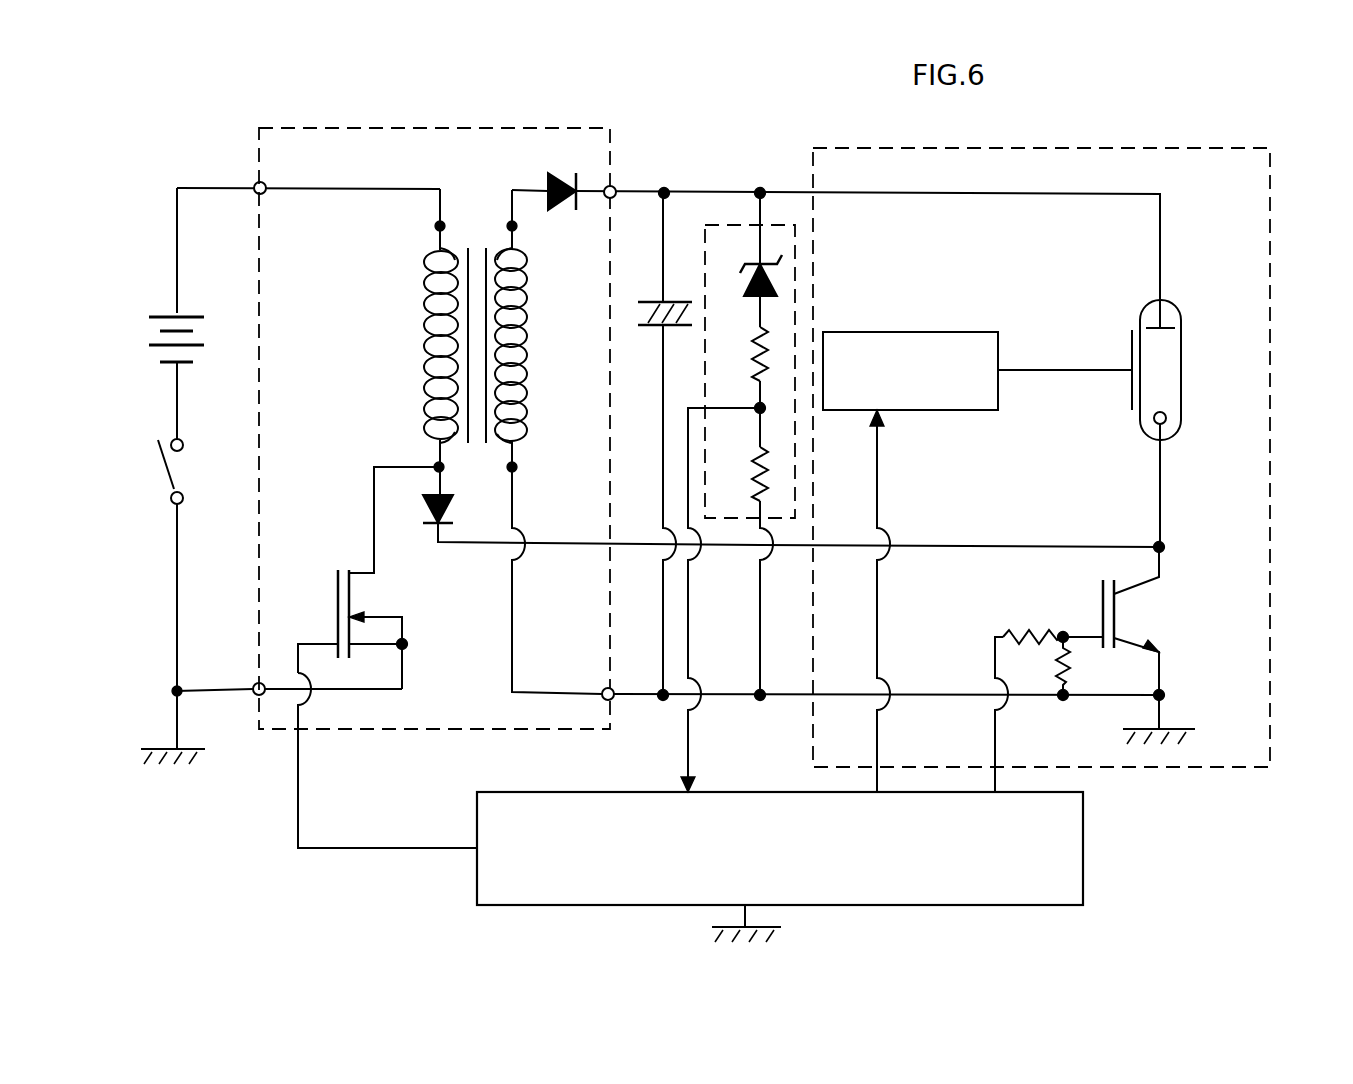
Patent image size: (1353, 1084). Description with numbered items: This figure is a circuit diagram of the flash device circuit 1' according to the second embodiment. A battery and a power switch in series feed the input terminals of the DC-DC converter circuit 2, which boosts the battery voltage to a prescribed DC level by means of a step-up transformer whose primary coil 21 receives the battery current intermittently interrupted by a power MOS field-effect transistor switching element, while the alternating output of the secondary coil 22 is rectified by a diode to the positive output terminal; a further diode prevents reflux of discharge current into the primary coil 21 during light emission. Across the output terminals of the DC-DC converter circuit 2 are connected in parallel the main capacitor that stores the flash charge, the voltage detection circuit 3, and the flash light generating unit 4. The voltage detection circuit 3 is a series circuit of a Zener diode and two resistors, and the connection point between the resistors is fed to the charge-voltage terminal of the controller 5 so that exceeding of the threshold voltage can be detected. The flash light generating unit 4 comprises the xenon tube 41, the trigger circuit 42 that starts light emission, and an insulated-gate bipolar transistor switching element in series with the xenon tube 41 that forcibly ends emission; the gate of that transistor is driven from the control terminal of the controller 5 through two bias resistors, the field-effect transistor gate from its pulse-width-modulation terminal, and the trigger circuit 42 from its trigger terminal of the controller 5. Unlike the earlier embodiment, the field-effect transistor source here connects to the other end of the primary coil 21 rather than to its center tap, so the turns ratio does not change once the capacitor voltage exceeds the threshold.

The flash device circuit 1' is at (721, 466).
The DC-DC converter circuit 2 is at (260, 126).
The primary coil 21 is at (430, 292).
The secondary coil 22 is at (528, 322).
The voltage detection circuit 3 is at (796, 490).
The flash light generating unit 4 is at (1272, 258).
The xenon tube 41 is at (1183, 372).
The trigger circuit 42 is at (880, 332).
The controller 5 is at (1083, 852).